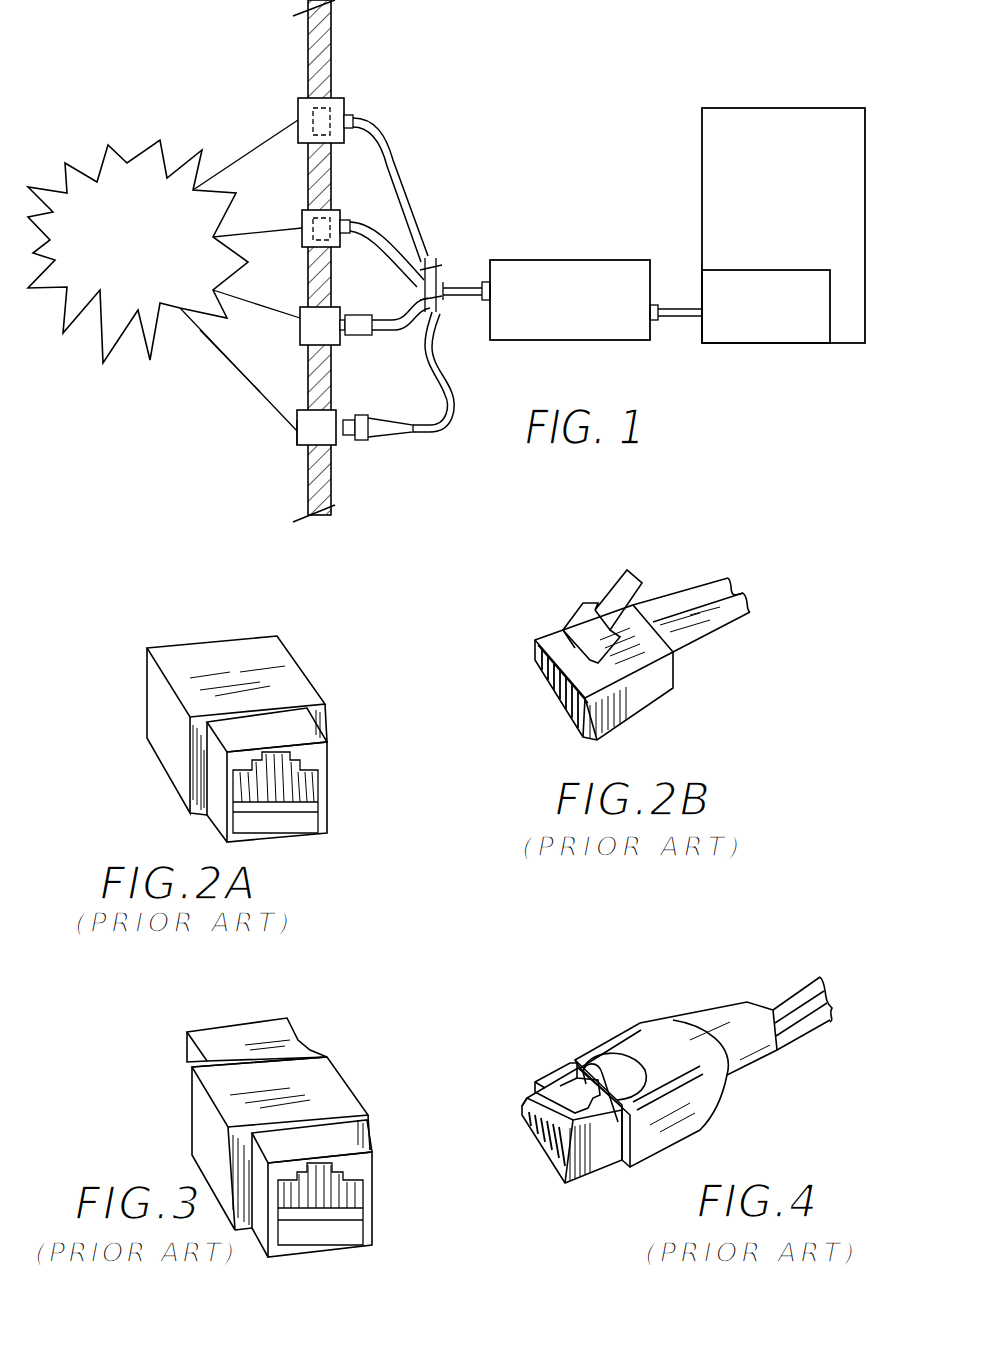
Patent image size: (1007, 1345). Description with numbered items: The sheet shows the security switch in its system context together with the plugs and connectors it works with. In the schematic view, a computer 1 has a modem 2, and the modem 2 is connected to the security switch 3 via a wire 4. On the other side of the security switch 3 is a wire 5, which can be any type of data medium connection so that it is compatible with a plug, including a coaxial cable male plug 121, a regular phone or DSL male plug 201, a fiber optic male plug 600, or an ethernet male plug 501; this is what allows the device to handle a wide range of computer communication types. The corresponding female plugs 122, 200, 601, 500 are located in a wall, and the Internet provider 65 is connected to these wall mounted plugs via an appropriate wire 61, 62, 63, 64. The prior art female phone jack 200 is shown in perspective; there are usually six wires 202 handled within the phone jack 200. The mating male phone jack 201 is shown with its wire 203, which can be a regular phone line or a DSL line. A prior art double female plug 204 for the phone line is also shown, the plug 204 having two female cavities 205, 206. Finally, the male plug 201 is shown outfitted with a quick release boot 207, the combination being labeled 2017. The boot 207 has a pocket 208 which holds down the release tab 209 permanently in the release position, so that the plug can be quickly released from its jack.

In FIG. 1, the computer 1 is at (797, 120).
In FIG. 1, the modem 2 is at (788, 335).
In FIG. 1, the security switch 3 is at (640, 260).
In FIG. 1, the wire 4 is at (680, 318).
In FIG. 1, the wire 5 is at (463, 298).
In FIG. 1, the wire 61 is at (262, 400).
In FIG. 1, the wire 62 is at (270, 318).
In FIG. 1, the wire 63 is at (253, 236).
In FIG. 1, the wire 64 is at (245, 150).
In FIG. 1, the Internet provider 65 is at (100, 340).
In FIG. 1, the coaxial cable male plug 121 is at (362, 314).
In FIG. 1, the female plug 122 is at (242, 377).
In FIG. 1, the female phone jack 200 is at (302, 213).
In FIG. 2A, the female phone jack 200 is at (227, 657).
In FIG. 1, the male phone jack 201 is at (352, 220).
In FIG. 2B, the male phone jack 201 is at (643, 688).
In FIG. 4, the male phone jack 201 is at (600, 1150).
In FIG. 2A, the wires 202 is at (300, 782).
In FIG. 2B, the wire 203 is at (712, 617).
In FIG. 4, the wire 203 is at (800, 1035).
In FIG. 3, the double female plug 204 is at (305, 1085).
In FIG. 3, the female cavity 205 is at (343, 1190).
In FIG. 3, the female cavity 206 is at (213, 1124).
In FIG. 4, the quick release boot 207 is at (702, 1105).
In FIG. 4, the pocket 208 is at (612, 1060).
In FIG. 4, the release tab 209 is at (562, 1085).
In FIG. 1, the female plug 500 is at (298, 98).
In FIG. 1, the ethernet male plug 501 is at (352, 112).
In FIG. 1, the fiber optic male plug 600 is at (348, 440).
In FIG. 1, the female plug 601 is at (296, 448).
In FIG. 4, the combination of male plug and quick release boot 2017 is at (687, 1074).